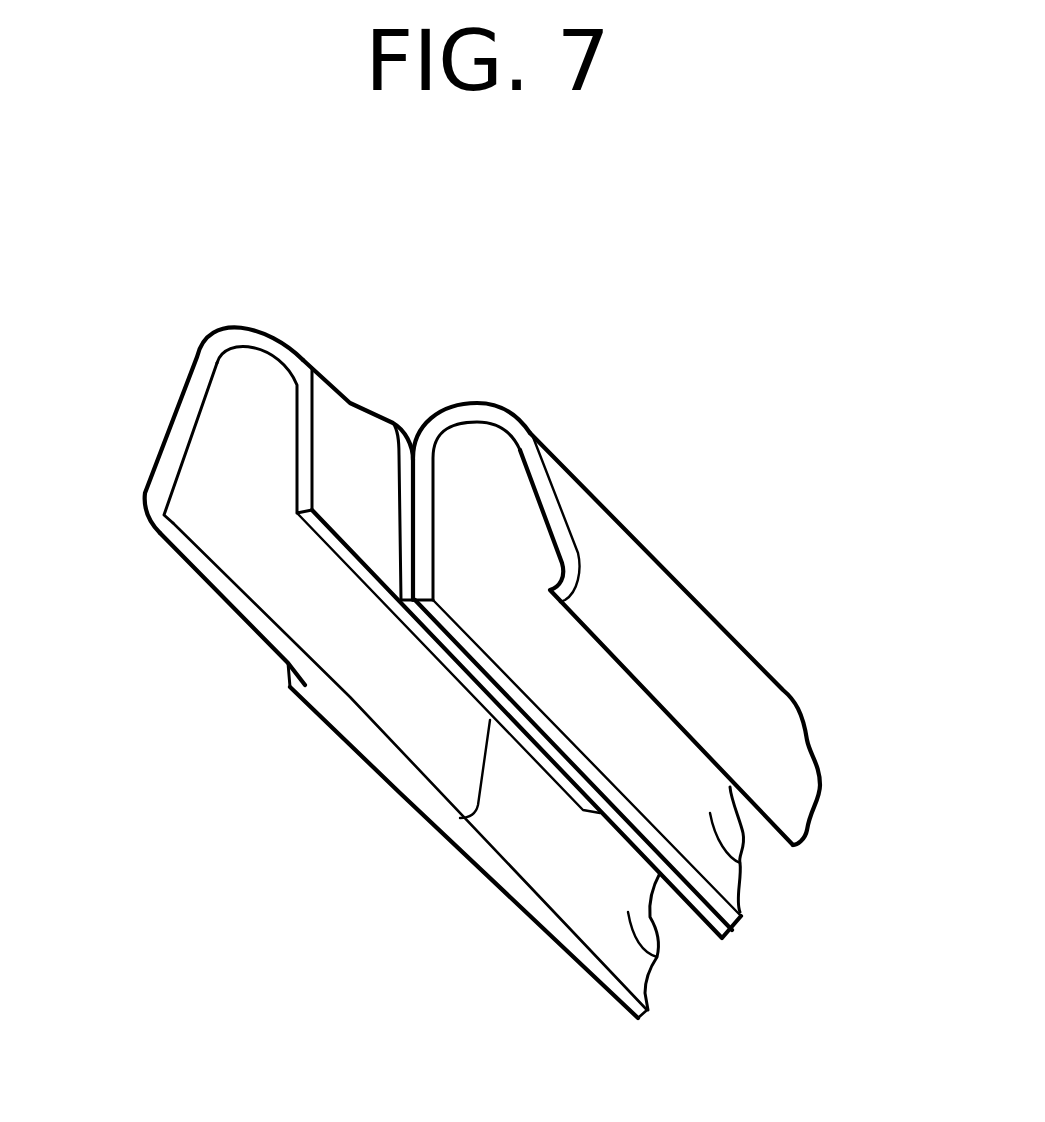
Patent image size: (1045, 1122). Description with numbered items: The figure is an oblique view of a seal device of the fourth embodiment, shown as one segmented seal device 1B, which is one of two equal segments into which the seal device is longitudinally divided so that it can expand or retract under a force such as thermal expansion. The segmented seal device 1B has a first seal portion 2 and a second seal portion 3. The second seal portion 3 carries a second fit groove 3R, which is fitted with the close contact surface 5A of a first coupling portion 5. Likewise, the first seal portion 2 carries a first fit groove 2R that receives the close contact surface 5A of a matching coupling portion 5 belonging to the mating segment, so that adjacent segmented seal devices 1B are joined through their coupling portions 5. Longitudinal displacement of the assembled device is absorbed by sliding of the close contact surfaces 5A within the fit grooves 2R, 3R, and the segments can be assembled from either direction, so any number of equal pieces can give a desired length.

The segmented seal device 1B is at (733, 630).
The first seal portion 2 is at (605, 557).
The first fit groove 2R is at (742, 867).
The second seal portion 3 is at (396, 416).
The second fit groove 3R is at (657, 960).
The first coupling portion 5 is at (202, 455).
The close contact surface 5A is at (340, 447).